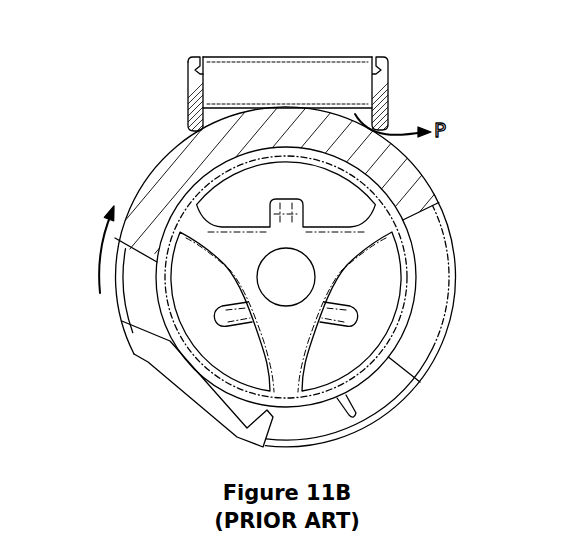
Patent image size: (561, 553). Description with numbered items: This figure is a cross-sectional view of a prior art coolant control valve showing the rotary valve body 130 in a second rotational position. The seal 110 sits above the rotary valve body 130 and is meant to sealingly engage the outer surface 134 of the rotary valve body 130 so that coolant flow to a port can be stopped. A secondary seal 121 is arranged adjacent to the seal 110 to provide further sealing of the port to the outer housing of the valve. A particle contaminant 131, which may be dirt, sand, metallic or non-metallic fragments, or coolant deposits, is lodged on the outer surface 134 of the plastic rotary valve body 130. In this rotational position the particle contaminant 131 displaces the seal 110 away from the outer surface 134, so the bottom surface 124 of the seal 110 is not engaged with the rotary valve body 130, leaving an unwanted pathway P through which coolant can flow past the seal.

The seal 110 is at (195, 95).
The secondary seal 121 is at (196, 78).
The particle contaminant 131 is at (198, 132).
The bottom surface 124 is at (357, 117).
The rotary valve body 130 is at (422, 192).
The outer surface 134 is at (143, 182).